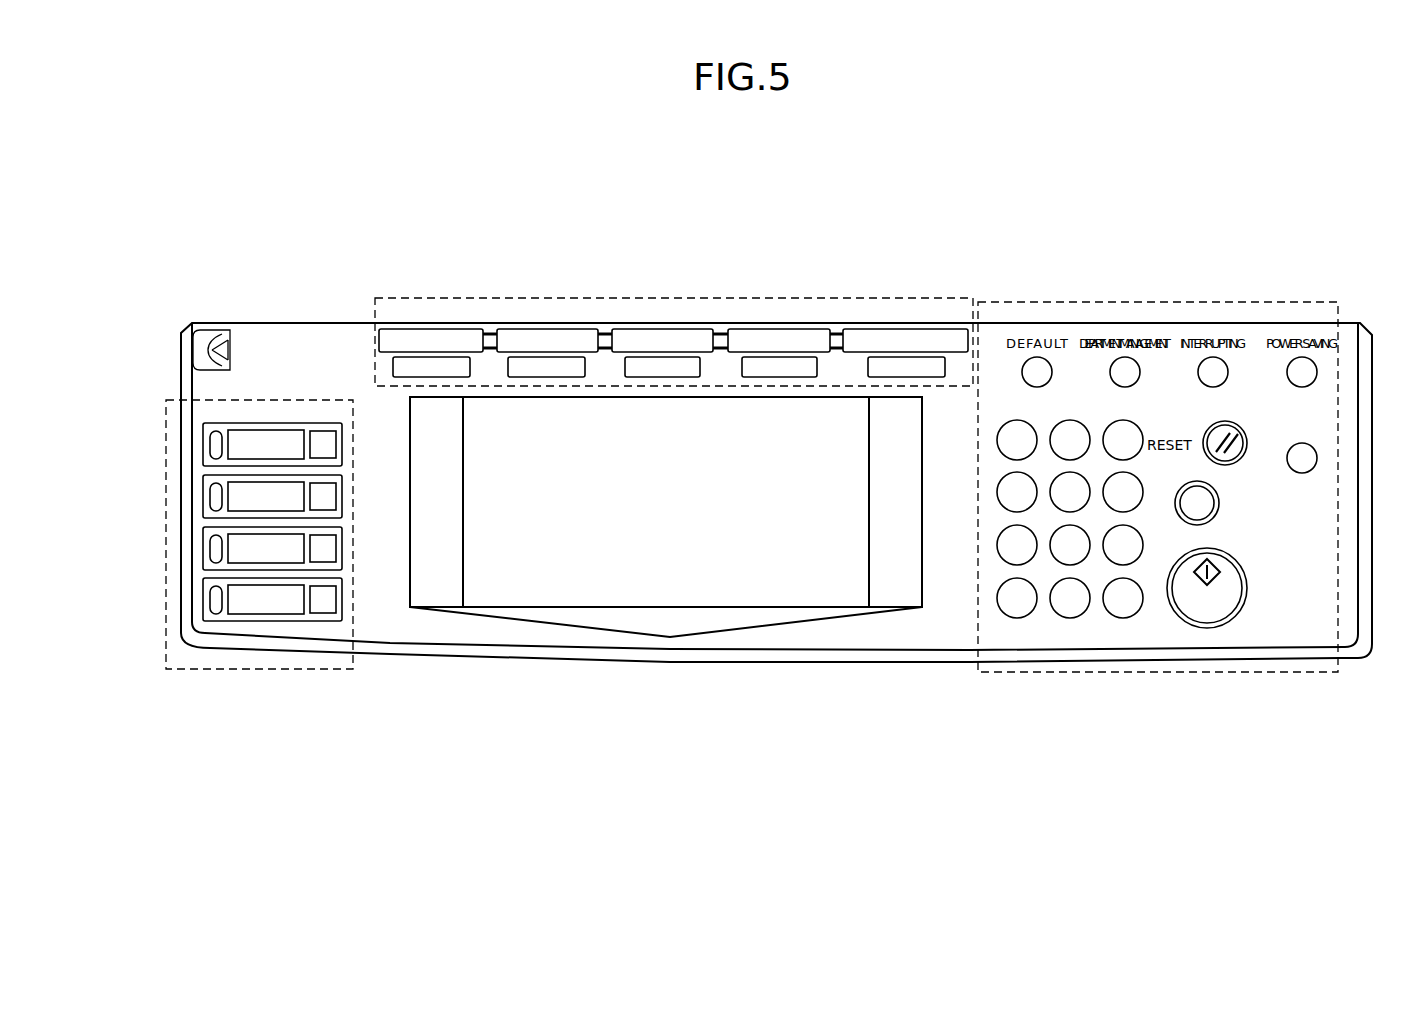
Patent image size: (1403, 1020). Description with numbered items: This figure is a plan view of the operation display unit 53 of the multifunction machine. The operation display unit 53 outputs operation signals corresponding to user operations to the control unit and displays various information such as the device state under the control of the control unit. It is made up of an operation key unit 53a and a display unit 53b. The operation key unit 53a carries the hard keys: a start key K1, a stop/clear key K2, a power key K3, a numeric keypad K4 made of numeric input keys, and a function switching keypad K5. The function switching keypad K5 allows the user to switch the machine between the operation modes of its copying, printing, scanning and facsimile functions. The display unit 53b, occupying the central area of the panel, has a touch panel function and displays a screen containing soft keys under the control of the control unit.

The operation display unit 53 is at (1183, 226).
The operation key unit 53a is at (681, 298).
The display unit 53b is at (683, 562).
The start key K1 is at (1248, 585).
The stop/clear key K2 is at (1213, 521).
The power key K3 is at (1313, 472).
The numeric keypad K4 is at (1044, 614).
The function switching keypad K5 is at (201, 541).